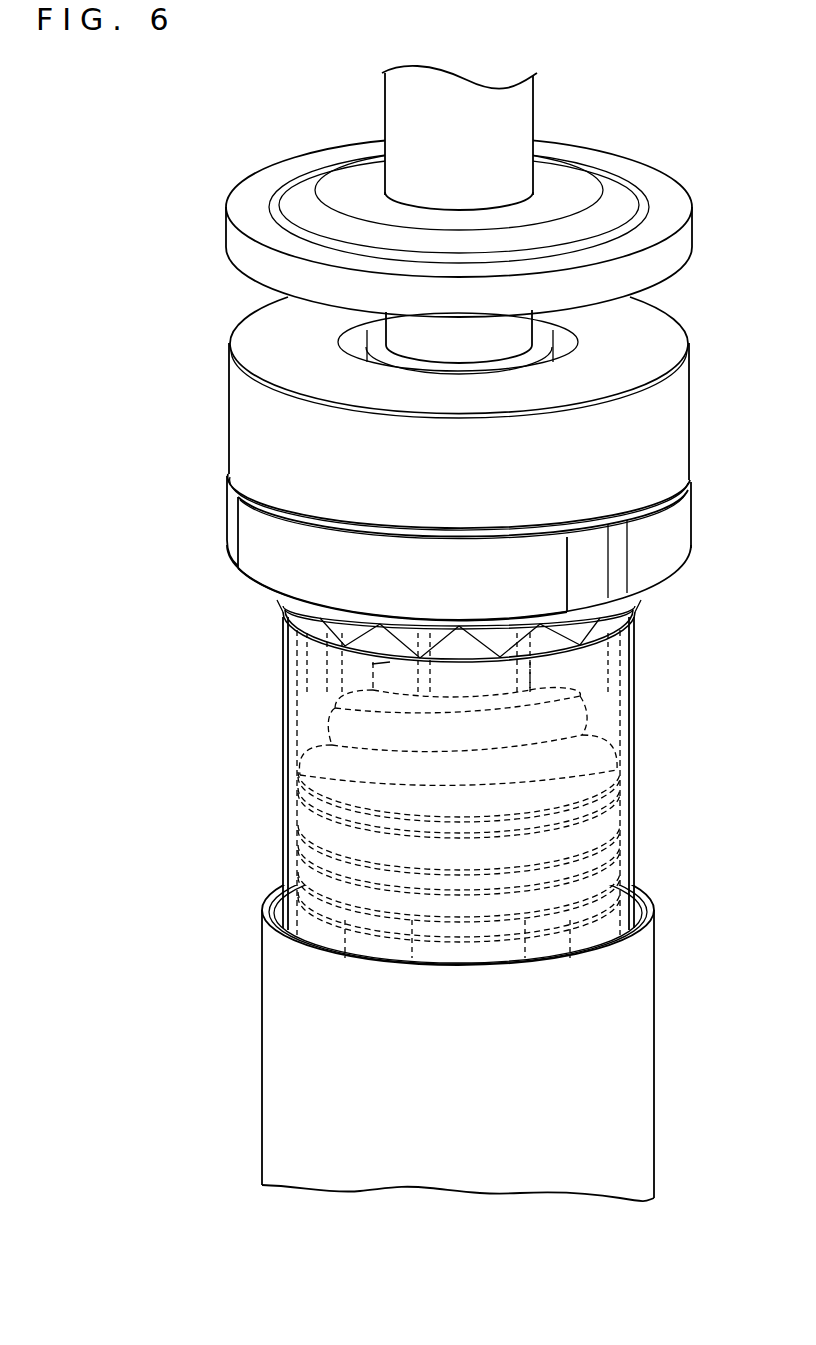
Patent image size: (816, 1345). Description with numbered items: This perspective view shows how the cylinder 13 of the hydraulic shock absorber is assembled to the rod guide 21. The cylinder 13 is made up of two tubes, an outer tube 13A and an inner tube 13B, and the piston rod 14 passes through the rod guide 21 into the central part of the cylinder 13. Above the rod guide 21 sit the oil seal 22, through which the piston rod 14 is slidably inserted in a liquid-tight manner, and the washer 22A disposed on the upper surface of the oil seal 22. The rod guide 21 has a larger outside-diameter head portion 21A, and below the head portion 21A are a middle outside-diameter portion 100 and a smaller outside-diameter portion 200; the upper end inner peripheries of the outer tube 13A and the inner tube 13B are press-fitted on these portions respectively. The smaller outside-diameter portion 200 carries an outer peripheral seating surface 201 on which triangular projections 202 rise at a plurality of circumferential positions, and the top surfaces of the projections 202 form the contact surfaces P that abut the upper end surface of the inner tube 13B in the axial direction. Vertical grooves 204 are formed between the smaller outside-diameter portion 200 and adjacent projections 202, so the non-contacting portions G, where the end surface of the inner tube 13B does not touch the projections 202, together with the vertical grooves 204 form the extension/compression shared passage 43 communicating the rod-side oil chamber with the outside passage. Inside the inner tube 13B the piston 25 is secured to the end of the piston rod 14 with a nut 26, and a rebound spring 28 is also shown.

The piston rod 14 is at (393, 102).
The washer 22A is at (233, 230).
The oil seal 22 is at (230, 413).
The rod guide 21 is at (274, 543).
The head portion 21A is at (263, 561).
The outer peripheral seating surface 201 is at (323, 649).
The projections 202 is at (380, 625).
The smaller outside-diameter portion 200 is at (431, 645).
The vertical grooves 204 is at (467, 625).
The non-contacting portions G is at (527, 647).
The middle outside-diameter portion 100 is at (327, 614).
The contact surfaces P is at (380, 663).
The extension/compression shared passage 43 is at (478, 652).
The rebound spring 28 is at (613, 723).
The piston 25 is at (607, 820).
The nut 26 is at (608, 948).
The cylinder 13 is at (443, 909).
The outer tube 13A is at (260, 1016).
The inner tube 13B is at (283, 740).